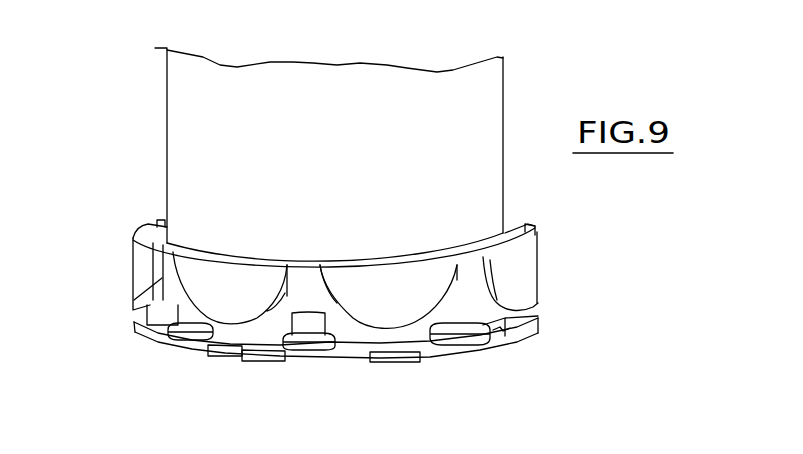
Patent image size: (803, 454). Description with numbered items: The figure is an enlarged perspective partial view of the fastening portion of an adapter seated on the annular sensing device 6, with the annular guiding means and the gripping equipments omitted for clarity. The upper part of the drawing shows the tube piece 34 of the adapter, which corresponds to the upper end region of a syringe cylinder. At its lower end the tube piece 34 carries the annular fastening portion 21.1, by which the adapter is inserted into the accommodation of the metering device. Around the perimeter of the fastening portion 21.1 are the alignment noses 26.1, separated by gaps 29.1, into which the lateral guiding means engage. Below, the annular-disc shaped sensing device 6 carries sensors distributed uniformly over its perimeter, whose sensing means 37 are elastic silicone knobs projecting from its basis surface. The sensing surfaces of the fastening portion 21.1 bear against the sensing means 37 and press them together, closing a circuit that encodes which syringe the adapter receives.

The tube piece 34 is at (430, 130).
The gap 29.1 is at (297, 275).
The alignment nose 26.1 is at (360, 283).
The annular fastening portion 21.1 is at (150, 280).
The annular sensing device 6 is at (270, 355).
The sensing means 37 is at (309, 328).